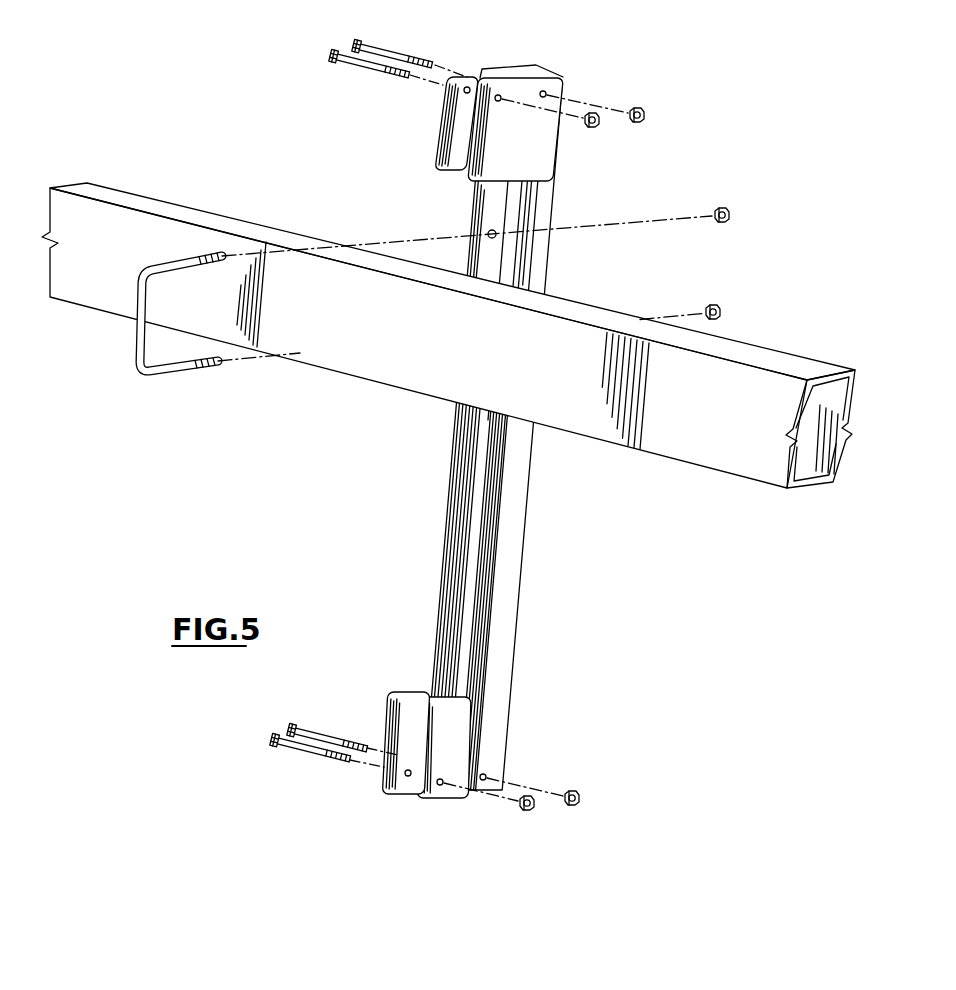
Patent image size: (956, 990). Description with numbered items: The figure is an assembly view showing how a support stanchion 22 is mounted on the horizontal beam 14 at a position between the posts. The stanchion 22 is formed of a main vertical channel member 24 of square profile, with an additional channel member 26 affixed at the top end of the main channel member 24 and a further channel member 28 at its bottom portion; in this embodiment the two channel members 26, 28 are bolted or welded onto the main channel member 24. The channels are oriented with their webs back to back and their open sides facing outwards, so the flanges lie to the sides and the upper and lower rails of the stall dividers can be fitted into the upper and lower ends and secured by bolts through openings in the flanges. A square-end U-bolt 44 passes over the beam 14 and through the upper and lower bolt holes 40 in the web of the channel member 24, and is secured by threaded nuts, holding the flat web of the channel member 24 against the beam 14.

The horizontal beam 14 is at (732, 443).
The support stanchion 22 is at (448, 438).
The main vertical channel member 24 is at (492, 730).
The additional channel member 26 is at (463, 88).
The channel member 28 is at (440, 794).
The bolt holes 40 is at (486, 233).
The square-end U-bolt 44 is at (140, 375).